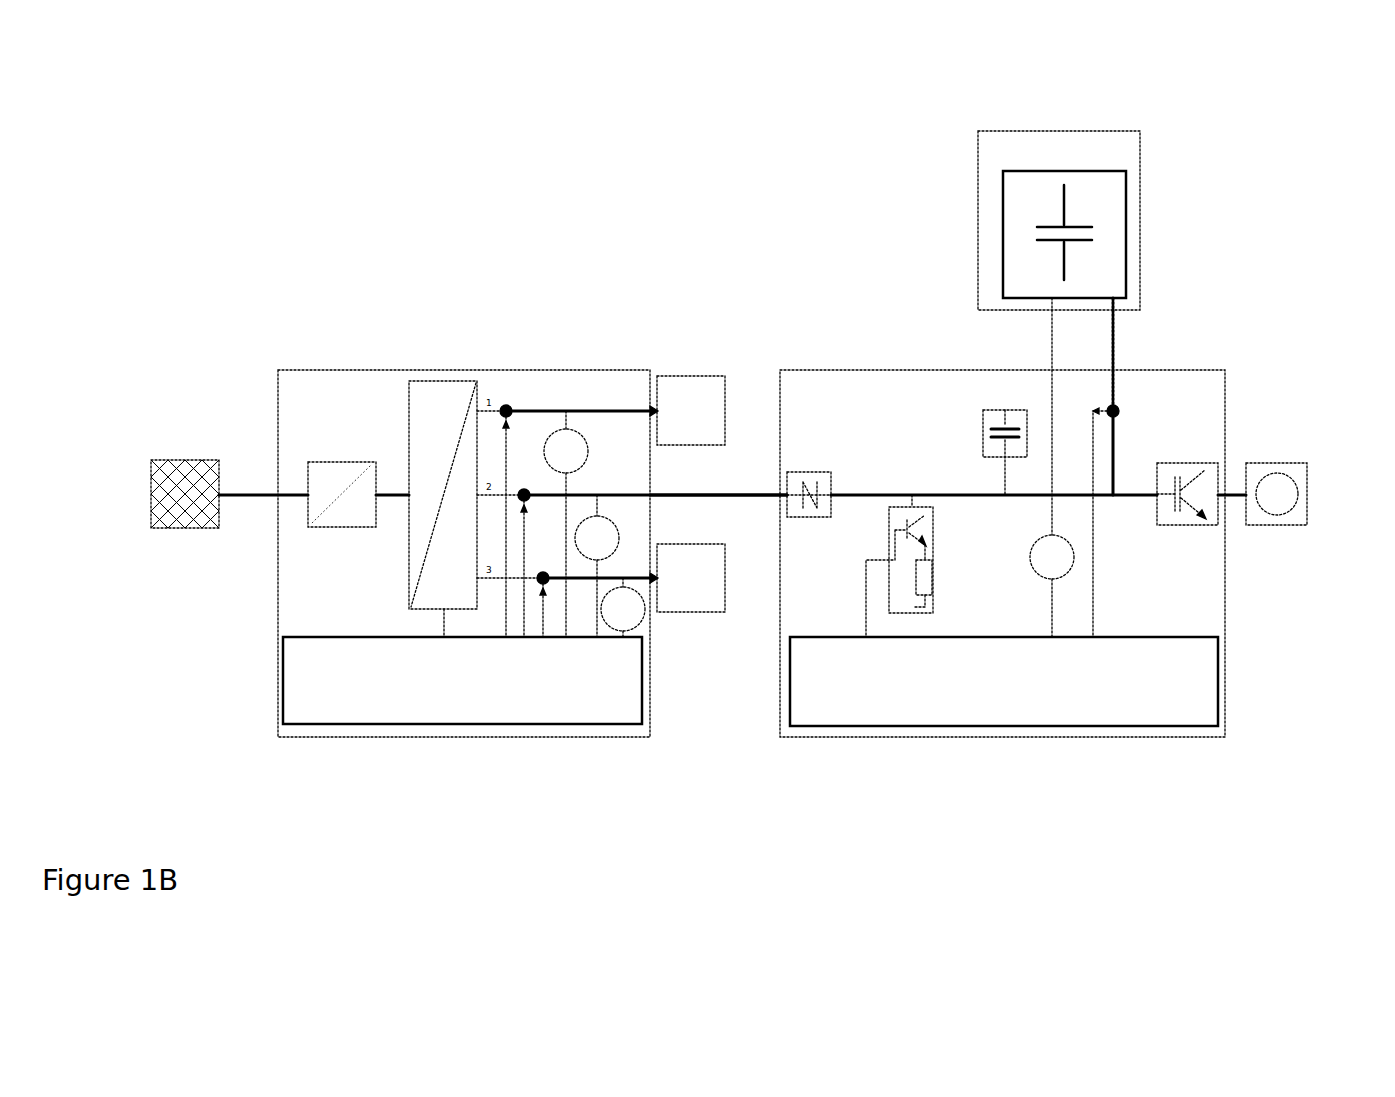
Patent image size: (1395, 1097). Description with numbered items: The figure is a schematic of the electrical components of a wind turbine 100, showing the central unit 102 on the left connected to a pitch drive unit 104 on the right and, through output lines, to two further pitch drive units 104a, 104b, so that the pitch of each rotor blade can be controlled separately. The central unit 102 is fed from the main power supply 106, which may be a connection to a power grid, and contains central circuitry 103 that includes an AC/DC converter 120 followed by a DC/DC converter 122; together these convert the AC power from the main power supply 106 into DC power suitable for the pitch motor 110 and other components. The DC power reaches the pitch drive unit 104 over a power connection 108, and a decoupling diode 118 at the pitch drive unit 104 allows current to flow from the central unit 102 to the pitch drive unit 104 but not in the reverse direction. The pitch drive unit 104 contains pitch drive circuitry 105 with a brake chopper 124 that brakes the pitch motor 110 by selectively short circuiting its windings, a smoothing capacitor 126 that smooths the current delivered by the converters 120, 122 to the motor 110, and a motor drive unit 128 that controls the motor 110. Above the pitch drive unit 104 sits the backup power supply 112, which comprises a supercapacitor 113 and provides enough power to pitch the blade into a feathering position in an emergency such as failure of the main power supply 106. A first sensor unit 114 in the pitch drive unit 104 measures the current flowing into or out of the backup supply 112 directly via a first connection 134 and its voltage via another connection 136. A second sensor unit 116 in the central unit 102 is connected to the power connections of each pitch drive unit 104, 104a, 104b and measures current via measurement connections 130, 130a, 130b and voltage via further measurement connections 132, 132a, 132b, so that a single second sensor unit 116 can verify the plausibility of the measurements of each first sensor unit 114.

The wind turbine 100 is at (293, 135).
The central unit 102 is at (345, 371).
The central circuitry 103 is at (392, 388).
The pitch drive unit 104 is at (907, 370).
The further pitch drive unit 104a is at (683, 376).
The further pitch drive unit 104b is at (673, 612).
The pitch drive circuitry 105 is at (938, 397).
The main power supply 106 is at (212, 460).
The power connection 108 is at (735, 497).
The pitch motor 110 is at (1287, 463).
The backup power supply 112 is at (1023, 131).
The supercapacitor 113 is at (1003, 212).
The first sensor unit 114 is at (940, 726).
The second sensor unit 116 is at (380, 724).
The decoupling diode 118 is at (800, 472).
The AC/DC converter 120 is at (308, 527).
The DC/DC converter 122 is at (408, 566).
The brake chopper 124 is at (907, 613).
The smoothing capacitor 126 is at (1032, 415).
The motor drive unit 128 is at (1193, 525).
The measurement connection 130 is at (524, 489).
The measurement connection 130a is at (505, 405).
The measurement connection 130b is at (543, 572).
The measurement connection 132 is at (589, 558).
The measurement connection 132a is at (553, 468).
The measurement connection 132b is at (614, 631).
The first connection 134 is at (1120, 420).
The connection 136 is at (1058, 578).